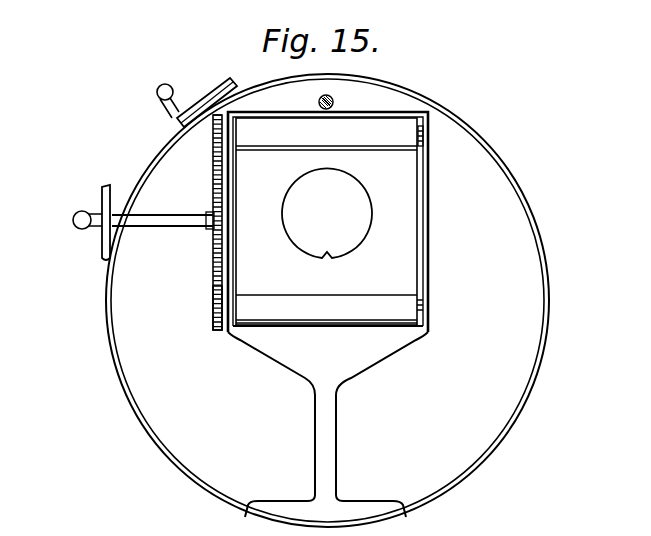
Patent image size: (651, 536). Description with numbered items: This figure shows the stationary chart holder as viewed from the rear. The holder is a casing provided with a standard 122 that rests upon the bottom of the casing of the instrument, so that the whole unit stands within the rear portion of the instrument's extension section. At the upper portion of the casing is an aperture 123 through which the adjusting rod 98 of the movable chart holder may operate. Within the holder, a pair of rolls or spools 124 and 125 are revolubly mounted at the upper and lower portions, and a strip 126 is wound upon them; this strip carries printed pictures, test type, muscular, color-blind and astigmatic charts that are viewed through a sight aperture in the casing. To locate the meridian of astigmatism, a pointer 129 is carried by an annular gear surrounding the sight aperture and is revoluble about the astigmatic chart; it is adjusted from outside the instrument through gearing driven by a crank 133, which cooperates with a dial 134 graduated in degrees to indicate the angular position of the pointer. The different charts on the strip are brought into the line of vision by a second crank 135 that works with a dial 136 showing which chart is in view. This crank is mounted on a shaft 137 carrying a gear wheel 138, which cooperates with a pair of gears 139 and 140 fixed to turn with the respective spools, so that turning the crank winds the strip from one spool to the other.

The adjusting rod 98 is at (334, 103).
The standard 122 is at (332, 437).
The aperture 123 is at (318, 103).
The roll or spool 124 is at (420, 137).
The roll or spool 125 is at (421, 308).
The strip 126 is at (400, 232).
The pointer 129 is at (327, 262).
The crank 133 is at (157, 96).
The dial 134 is at (216, 82).
The crank 135 is at (100, 207).
The dial 136 is at (102, 244).
The shaft 137 is at (150, 220).
The gear wheel 138 is at (212, 231).
The gear 139 is at (212, 140).
The gear 140 is at (212, 306).